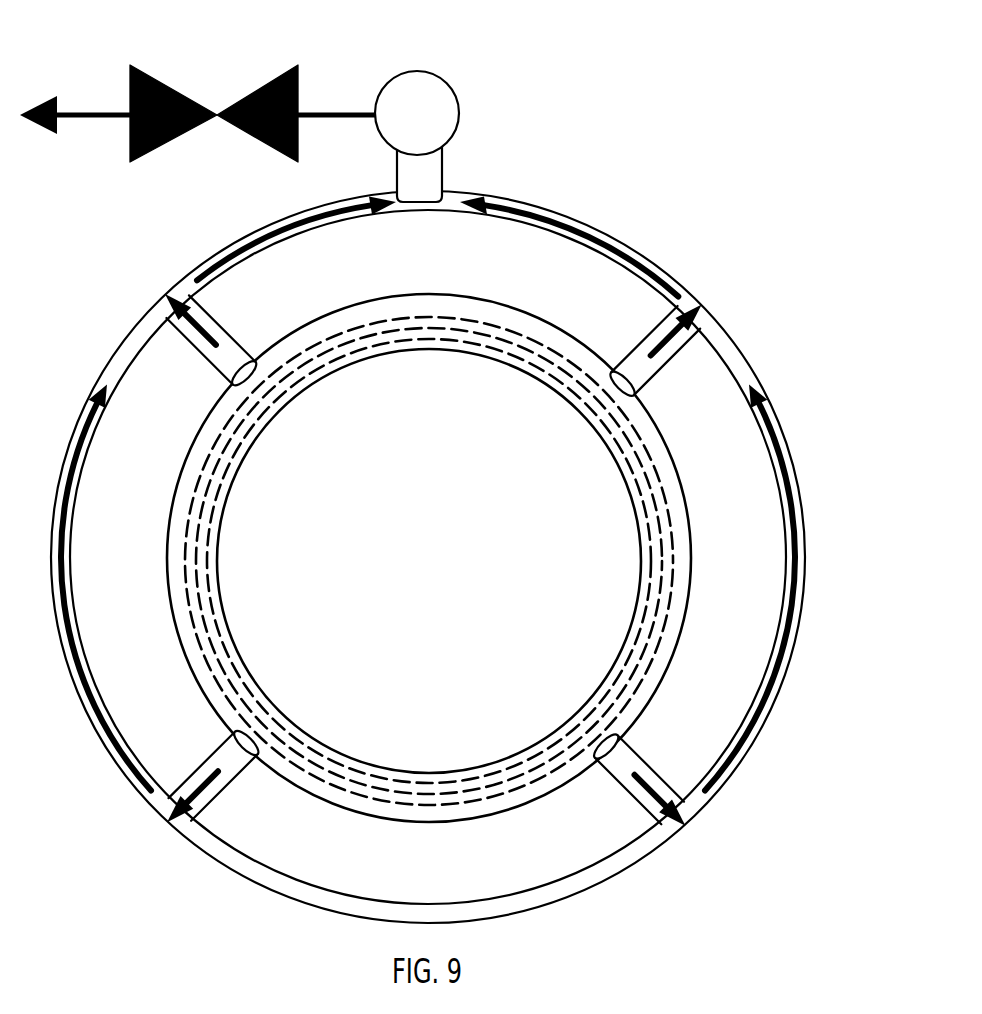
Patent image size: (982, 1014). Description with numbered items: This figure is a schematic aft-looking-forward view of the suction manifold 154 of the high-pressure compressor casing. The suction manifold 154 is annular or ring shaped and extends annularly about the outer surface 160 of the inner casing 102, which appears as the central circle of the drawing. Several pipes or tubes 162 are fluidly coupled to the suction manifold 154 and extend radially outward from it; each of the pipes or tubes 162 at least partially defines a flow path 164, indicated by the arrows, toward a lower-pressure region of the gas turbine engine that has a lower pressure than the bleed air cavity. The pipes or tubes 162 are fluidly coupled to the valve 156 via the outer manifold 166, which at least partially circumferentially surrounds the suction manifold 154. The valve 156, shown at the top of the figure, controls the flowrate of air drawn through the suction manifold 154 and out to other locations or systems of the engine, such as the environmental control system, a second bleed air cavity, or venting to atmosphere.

The inner casing 102 is at (432, 352).
The suction manifold 154 is at (537, 310).
The valve 156 is at (170, 80).
The outer surface 160 is at (228, 487).
The pipes or tubes 162 is at (176, 336).
The flow path 164 is at (218, 348).
The outer manifold 166 is at (800, 497).